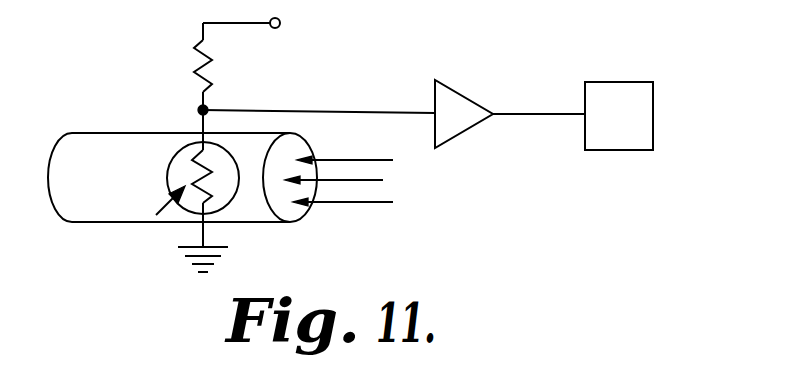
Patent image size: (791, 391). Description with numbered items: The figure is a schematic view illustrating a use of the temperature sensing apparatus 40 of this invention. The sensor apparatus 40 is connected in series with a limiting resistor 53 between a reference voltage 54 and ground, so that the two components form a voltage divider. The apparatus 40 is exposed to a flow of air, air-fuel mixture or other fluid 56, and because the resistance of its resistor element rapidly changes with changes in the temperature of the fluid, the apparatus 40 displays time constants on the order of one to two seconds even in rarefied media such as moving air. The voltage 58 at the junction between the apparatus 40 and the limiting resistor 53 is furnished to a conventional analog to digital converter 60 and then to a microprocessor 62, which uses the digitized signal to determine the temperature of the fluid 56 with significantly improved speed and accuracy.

The sensor apparatus 40 is at (155, 217).
The limiting resistor 53 is at (207, 74).
The reference voltage 54 is at (284, 28).
The flow of fluid 56 is at (370, 203).
The voltage 58 is at (207, 108).
The analog to digital converter 60 is at (457, 105).
The microprocessor 62 is at (623, 95).